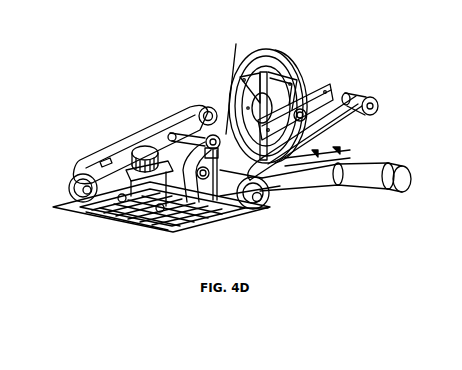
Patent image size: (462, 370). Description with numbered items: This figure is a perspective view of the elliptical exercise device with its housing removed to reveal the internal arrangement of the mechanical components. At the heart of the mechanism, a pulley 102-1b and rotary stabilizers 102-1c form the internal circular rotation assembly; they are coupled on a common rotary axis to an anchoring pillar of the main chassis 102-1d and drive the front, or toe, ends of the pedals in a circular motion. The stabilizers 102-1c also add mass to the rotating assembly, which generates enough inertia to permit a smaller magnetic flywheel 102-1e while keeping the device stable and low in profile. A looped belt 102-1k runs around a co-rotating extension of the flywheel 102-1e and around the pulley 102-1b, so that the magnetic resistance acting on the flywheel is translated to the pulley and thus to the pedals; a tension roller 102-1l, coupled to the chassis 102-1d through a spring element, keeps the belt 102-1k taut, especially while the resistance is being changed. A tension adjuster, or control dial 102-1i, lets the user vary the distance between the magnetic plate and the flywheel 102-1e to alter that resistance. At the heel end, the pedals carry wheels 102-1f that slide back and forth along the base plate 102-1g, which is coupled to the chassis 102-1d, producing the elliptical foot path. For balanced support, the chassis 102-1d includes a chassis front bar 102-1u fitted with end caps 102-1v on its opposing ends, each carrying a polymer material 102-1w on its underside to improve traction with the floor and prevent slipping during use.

The pulley 102-1b is at (278, 58).
The rotary stabilizers 102-1c is at (318, 97).
The main chassis 102-1d is at (322, 160).
The magnetic flywheel 102-1e is at (187, 177).
The wheels 102-1f is at (76, 186).
The base plate 102-1g is at (77, 215).
The tension adjuster/control dial 102-1i is at (141, 153).
The looped belt 102-1k is at (221, 134).
The tension roller 102-1l is at (206, 128).
The chassis front bar 102-1u is at (359, 169).
The end caps 102-1v is at (380, 178).
The polymer material 102-1w is at (398, 192).